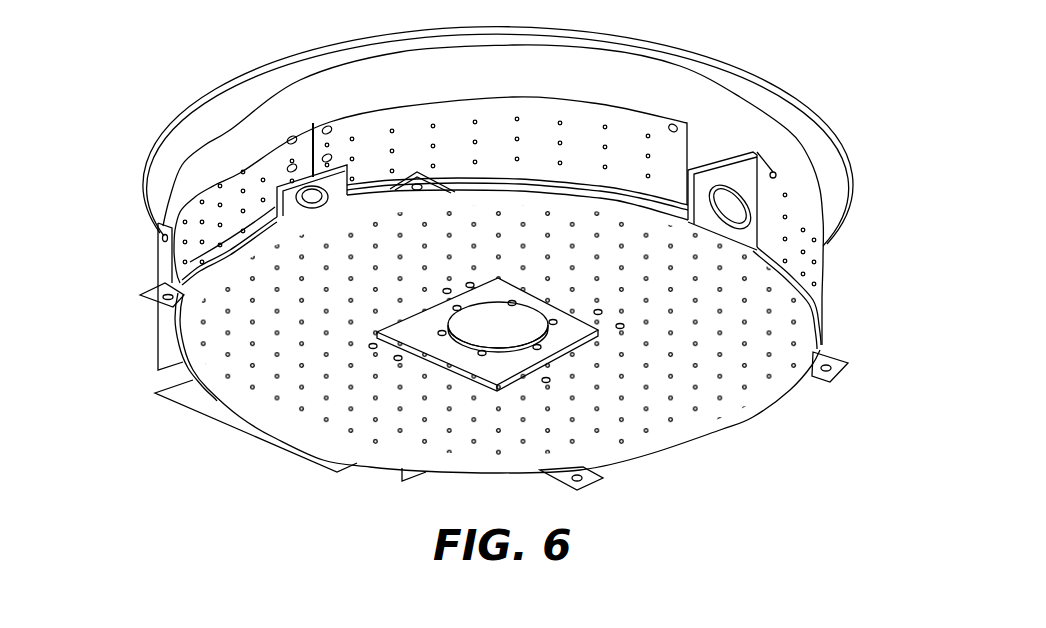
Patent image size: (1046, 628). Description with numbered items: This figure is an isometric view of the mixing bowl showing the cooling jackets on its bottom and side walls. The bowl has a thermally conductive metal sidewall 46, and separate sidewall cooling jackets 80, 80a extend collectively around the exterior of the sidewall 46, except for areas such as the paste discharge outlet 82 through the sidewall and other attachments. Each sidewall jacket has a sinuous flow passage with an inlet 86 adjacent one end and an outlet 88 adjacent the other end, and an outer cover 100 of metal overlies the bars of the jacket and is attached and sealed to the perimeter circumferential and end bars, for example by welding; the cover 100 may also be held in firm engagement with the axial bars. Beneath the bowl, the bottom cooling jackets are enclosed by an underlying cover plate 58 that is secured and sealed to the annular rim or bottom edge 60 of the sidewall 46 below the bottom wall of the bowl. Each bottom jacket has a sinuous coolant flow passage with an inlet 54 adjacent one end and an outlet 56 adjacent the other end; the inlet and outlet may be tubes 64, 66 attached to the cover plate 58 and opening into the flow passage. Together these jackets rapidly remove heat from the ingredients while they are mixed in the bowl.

The sidewall 46 is at (750, 128).
The inlet 54 is at (470, 283).
The outlet 56 is at (445, 290).
The cover plate 58 is at (760, 402).
The bottom edge 60 is at (172, 270).
The inlet tube 64 is at (372, 347).
The outlet tube 66 is at (496, 336).
The cooling jacket 80 is at (437, 98).
The cooling jacket 80a is at (836, 242).
The paste discharge outlet 82 is at (156, 410).
The inlet 86 is at (292, 137).
The outlet 88 is at (318, 126).
The outer cover 100 is at (235, 160).